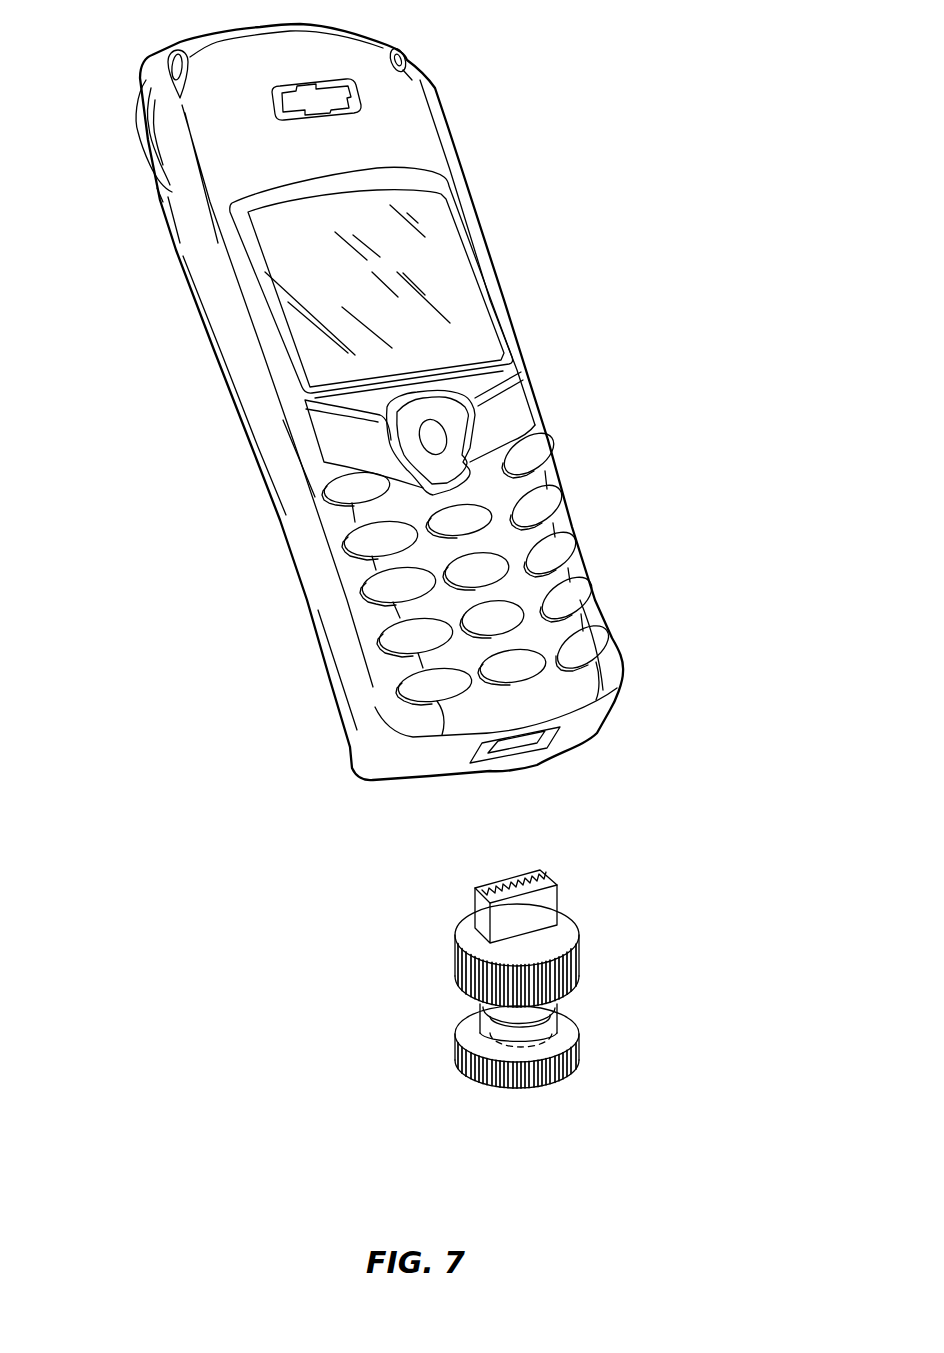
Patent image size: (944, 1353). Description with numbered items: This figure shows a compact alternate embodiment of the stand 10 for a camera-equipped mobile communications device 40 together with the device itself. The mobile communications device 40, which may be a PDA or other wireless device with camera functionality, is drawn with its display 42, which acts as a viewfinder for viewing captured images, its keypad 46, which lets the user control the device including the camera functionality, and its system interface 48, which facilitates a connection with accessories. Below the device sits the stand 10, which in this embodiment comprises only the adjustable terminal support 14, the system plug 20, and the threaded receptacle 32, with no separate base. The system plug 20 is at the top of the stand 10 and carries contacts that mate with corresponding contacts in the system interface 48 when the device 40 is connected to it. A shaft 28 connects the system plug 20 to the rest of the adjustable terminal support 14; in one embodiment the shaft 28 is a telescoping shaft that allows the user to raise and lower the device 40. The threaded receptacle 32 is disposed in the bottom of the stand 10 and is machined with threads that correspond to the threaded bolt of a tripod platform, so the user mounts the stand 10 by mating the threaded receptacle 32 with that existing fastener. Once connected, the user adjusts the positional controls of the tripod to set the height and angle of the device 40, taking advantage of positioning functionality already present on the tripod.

The stand 10 is at (414, 920).
The adjustable terminal support 14 is at (414, 1010).
The system plug 20 is at (533, 910).
The shaft 28 is at (540, 1012).
The threaded receptacle 32 is at (510, 1050).
The mobile communications device 40 is at (549, 101).
The display 42 is at (462, 283).
The keypad 46 is at (641, 465).
The system interface 48 is at (517, 743).